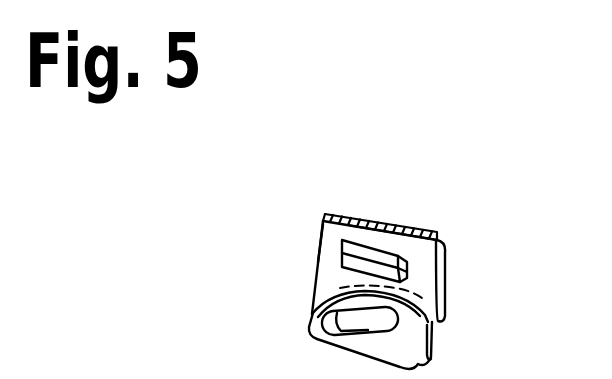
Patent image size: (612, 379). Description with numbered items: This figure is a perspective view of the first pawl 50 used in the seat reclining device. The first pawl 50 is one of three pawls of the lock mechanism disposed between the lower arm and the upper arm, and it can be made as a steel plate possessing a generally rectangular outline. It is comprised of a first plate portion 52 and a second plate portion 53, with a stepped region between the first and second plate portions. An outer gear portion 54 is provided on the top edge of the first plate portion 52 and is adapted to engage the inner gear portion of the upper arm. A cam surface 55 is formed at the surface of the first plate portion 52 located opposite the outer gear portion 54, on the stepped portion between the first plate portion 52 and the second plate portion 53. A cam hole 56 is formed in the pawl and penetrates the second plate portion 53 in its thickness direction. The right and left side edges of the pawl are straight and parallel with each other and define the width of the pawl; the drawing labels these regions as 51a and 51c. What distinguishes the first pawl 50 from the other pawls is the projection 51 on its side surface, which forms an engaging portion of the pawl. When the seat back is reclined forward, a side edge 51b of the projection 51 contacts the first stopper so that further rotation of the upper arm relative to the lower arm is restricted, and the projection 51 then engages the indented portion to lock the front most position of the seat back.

The first pawl 50 is at (350, 207).
The projection 51 is at (342, 252).
The upper edge of plate 51a is at (407, 232).
The side edge of the projection 51b is at (405, 267).
The side edge of plate 51c is at (318, 236).
The first plate portion 52 is at (320, 284).
The second plate portion 53 is at (417, 345).
The outer gear portion 54 is at (397, 222).
The cam surface 55 is at (447, 300).
The cam hole 56 is at (352, 330).